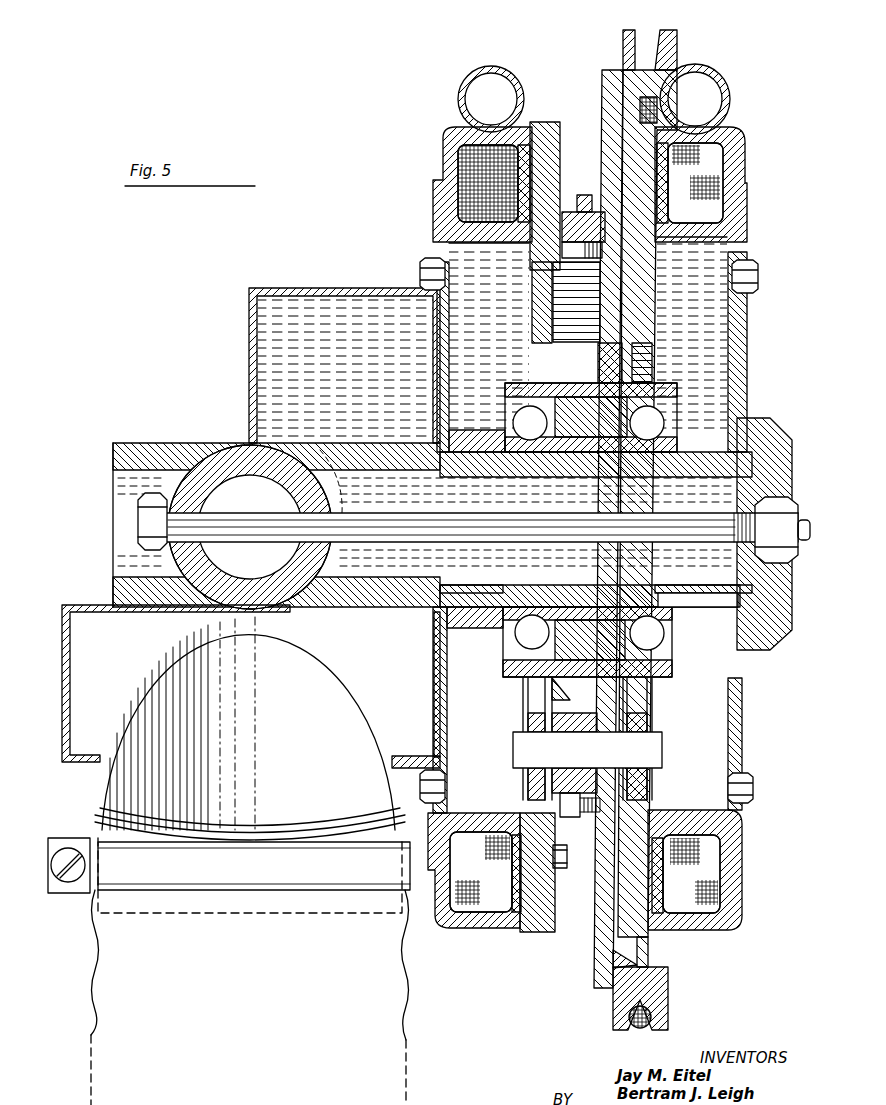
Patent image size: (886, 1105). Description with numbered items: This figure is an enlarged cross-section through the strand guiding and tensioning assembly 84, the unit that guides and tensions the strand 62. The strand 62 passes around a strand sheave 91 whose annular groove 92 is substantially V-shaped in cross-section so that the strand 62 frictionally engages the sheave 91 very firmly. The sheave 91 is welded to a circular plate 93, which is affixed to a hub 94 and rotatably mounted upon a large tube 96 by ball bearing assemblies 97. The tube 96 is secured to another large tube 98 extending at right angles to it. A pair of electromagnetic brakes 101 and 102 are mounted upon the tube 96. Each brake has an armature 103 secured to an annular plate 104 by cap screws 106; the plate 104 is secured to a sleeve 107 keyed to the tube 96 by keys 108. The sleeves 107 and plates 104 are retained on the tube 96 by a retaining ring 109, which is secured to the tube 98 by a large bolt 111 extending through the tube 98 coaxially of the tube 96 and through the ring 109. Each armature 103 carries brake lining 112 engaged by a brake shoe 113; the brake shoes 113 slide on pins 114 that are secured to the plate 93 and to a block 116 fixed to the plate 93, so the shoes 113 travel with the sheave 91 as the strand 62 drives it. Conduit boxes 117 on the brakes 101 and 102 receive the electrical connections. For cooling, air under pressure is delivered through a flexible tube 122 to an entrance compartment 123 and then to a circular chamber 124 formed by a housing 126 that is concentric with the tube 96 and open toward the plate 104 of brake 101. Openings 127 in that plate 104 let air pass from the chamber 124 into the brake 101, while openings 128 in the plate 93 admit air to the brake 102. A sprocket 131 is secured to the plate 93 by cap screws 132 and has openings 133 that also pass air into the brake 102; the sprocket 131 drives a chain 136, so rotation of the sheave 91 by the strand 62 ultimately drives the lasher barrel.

The strand 62 is at (638, 1030).
The strand guiding and tensioning assembly 84 is at (791, 75).
The strand sheave 91 is at (670, 65).
The annular groove 92 is at (655, 40).
The circular plate 93 is at (605, 950).
The hub 94 is at (589, 656).
The large tube 96 is at (122, 452).
The ball bearing assemblies 97 is at (523, 640).
The large tube 98 is at (190, 559).
The electromagnetic brake 101 is at (460, 160).
The electromagnetic brake 102 is at (722, 171).
The armature 103 is at (613, 543).
The annular plate 104 is at (447, 745).
The cap screws 106 is at (421, 272).
The sleeve 107 is at (472, 440).
The keys 108 is at (470, 590).
The retaining ring 109 is at (792, 610).
The large bolt 111 is at (140, 520).
The brake lining 112 is at (515, 880).
The brake shoe 113 is at (625, 895).
The pins 114 is at (600, 760).
The block 116 is at (572, 720).
The conduit boxes 117 is at (525, 93).
The flexible tube 122 is at (400, 1010).
The entrance compartment 123 is at (100, 703).
The circular chamber 124 is at (292, 360).
The housing 126 is at (322, 343).
The openings 127 is at (450, 396).
The openings 128 is at (591, 397).
The sprocket 131 is at (586, 195).
The cap screws 132 is at (570, 212).
The openings 133 is at (596, 381).
The chain 136 is at (560, 862).